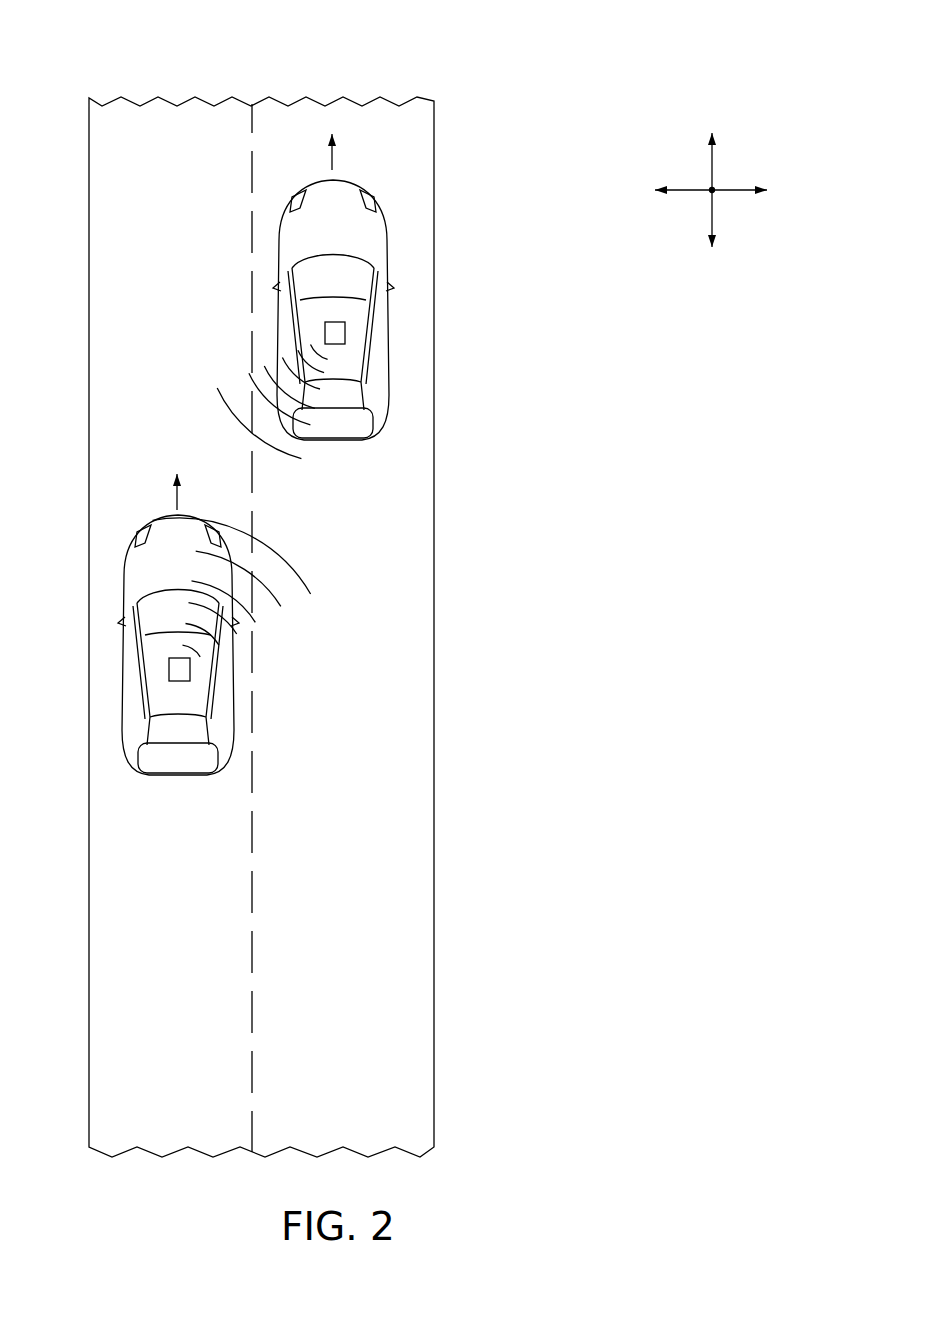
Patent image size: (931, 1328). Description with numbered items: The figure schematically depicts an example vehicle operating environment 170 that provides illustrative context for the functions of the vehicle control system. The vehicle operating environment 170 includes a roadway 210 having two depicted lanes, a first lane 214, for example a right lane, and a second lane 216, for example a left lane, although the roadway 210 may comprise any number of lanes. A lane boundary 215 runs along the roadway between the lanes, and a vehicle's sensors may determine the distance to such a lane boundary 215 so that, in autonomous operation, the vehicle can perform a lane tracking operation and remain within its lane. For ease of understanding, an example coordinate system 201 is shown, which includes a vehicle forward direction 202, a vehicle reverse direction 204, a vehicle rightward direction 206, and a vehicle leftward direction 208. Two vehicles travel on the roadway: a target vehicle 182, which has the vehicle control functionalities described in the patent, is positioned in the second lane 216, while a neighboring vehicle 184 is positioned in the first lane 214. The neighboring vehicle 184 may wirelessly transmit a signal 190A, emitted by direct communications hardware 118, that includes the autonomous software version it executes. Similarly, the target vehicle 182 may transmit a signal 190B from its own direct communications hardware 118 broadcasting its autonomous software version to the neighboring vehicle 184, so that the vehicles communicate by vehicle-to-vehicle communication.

The direct communications hardware 118 is at (337, 322).
The vehicle operating environment 170 is at (326, 578).
The target vehicle 182 is at (165, 783).
The neighboring vehicle 184 is at (346, 448).
The signal 190A is at (238, 343).
The signal 190B is at (310, 566).
The coordinate system 201 is at (716, 143).
The vehicle forward direction 202 is at (713, 166).
The vehicle reverse direction 204 is at (711, 213).
The vehicle rightward direction 206 is at (735, 192).
The vehicle leftward direction 208 is at (686, 190).
The roadway 210 is at (436, 457).
The first lane 214 is at (393, 127).
The lane boundary 215 is at (252, 974).
The second lane 216 is at (122, 123).